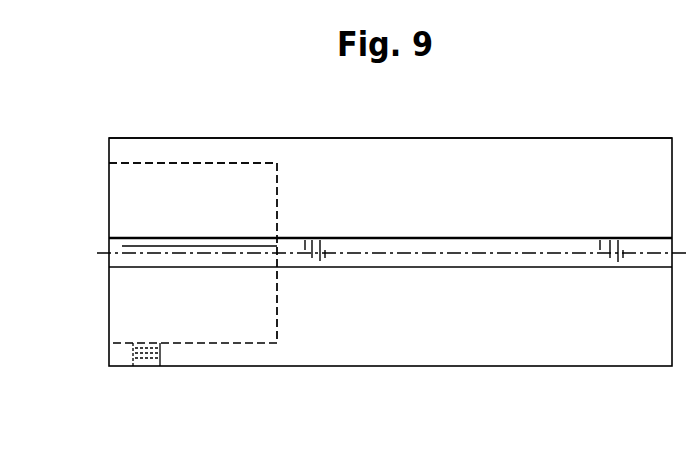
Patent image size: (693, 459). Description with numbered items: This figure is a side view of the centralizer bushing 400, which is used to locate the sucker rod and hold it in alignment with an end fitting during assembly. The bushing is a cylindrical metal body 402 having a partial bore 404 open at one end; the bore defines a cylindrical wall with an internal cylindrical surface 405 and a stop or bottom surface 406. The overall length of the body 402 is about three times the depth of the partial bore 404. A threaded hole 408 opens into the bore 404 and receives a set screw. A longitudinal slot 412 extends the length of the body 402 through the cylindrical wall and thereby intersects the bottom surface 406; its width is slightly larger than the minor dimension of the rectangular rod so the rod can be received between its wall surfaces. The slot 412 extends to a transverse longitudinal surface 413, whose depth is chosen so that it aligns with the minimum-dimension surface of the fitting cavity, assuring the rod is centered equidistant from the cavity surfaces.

The centralizer bushing 400 is at (396, 126).
The cylindrical metal body 402 is at (520, 138).
The partial bore 404 is at (232, 334).
The internal cylindrical surface 405 is at (191, 171).
The bottom surface 406 is at (277, 204).
The threaded hole 408 is at (153, 366).
The longitudinal slot 412 is at (427, 276).
The transverse longitudinal surface 413 is at (548, 263).